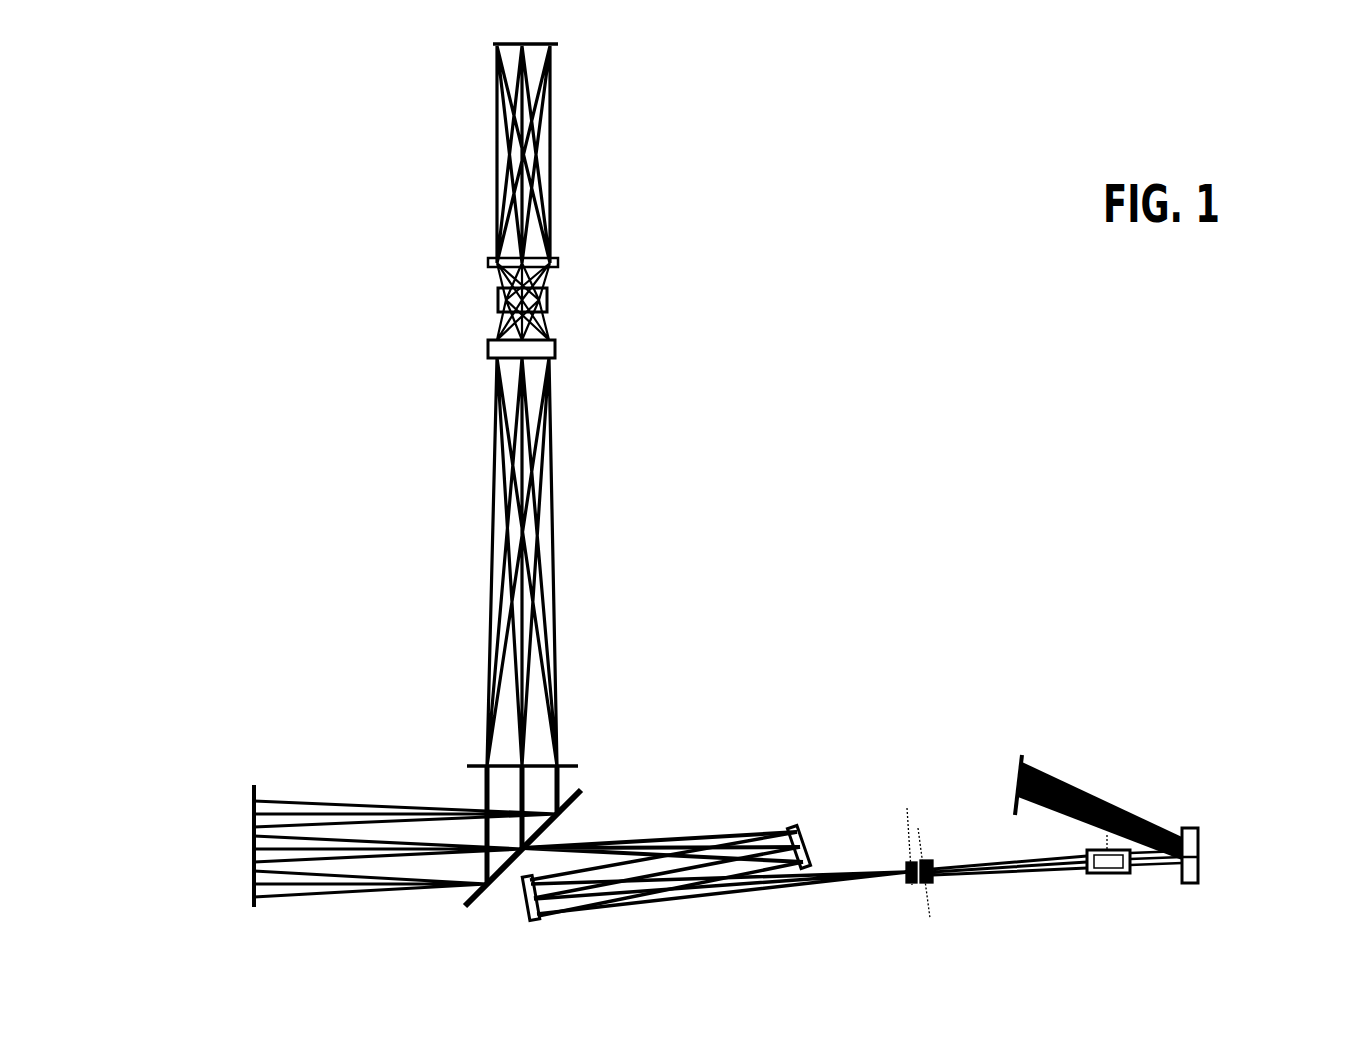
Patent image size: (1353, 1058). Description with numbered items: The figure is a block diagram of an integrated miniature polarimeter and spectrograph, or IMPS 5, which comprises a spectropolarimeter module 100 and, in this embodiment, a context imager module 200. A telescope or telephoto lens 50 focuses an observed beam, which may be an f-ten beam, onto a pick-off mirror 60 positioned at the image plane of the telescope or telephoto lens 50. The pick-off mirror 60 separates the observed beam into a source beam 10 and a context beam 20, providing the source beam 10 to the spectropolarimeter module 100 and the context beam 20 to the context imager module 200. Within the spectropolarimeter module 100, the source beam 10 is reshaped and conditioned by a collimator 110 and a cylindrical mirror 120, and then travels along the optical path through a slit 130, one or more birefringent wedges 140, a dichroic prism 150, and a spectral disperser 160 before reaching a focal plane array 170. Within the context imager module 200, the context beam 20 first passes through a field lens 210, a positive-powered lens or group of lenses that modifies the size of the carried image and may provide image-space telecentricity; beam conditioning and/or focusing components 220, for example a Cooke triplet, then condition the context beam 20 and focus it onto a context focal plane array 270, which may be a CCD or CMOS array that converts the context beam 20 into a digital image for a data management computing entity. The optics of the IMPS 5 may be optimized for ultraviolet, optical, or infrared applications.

The integrated miniature polarimeter and spectrograph (IMPS) 5 is at (894, 251).
The context imager module 200 is at (395, 582).
The context focal plane array 270 is at (498, 47).
The beam conditioning and/or focusing components 220 is at (455, 304).
The context beam 20 is at (558, 618).
The field lens 210 is at (468, 766).
The pick-off mirror 60 is at (581, 790).
The telescope or telephoto lens 50 is at (253, 860).
The spectropolarimeter module 100 is at (968, 612).
The source beam 10 is at (713, 837).
The collimator 110 is at (797, 826).
The cylindrical mirror 120 is at (530, 905).
The slit 130 is at (909, 880).
The birefringent wedges 140 is at (932, 880).
The dichroic prism 150 is at (1108, 873).
The spectral disperser 160 is at (1197, 857).
The focal plane array 170 is at (1022, 758).